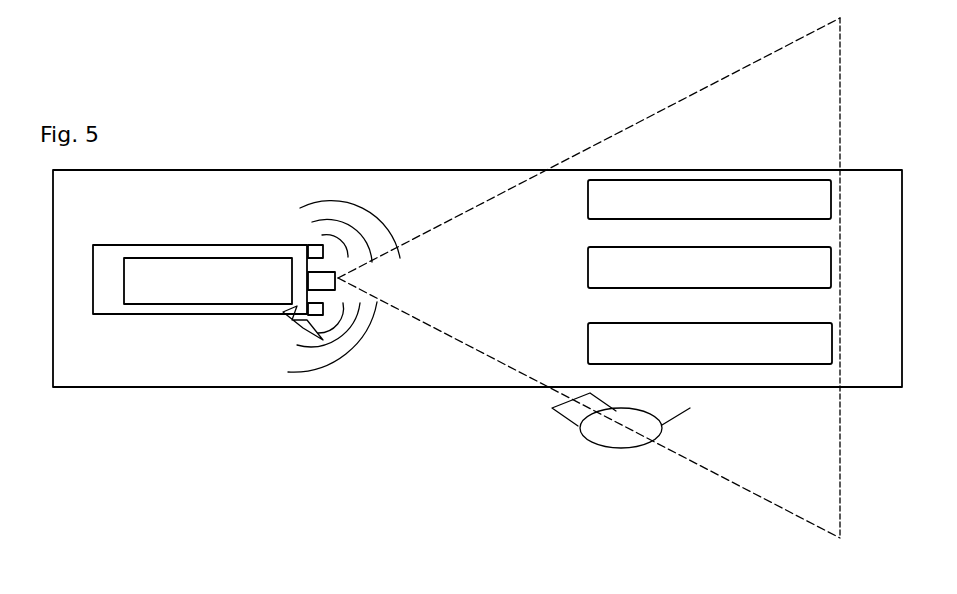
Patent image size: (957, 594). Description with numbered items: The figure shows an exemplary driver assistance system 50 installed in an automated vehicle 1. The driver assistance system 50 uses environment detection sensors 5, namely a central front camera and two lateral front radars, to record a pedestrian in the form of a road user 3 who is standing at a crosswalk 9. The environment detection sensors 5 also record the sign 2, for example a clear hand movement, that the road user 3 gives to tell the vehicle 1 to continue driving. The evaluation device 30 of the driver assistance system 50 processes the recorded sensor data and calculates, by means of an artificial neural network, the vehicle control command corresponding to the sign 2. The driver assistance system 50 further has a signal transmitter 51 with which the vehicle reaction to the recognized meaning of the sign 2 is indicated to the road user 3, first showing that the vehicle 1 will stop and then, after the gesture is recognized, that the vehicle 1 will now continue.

The vehicle 1 is at (93, 278).
The evaluation device 30 is at (207, 257).
The environment detection sensors 5 is at (316, 243).
The driver assistance system 50 is at (273, 225).
The signal transmitter 51 is at (300, 328).
The crosswalk 9 is at (788, 197).
The sign 2 is at (580, 388).
The road user 3 is at (620, 448).